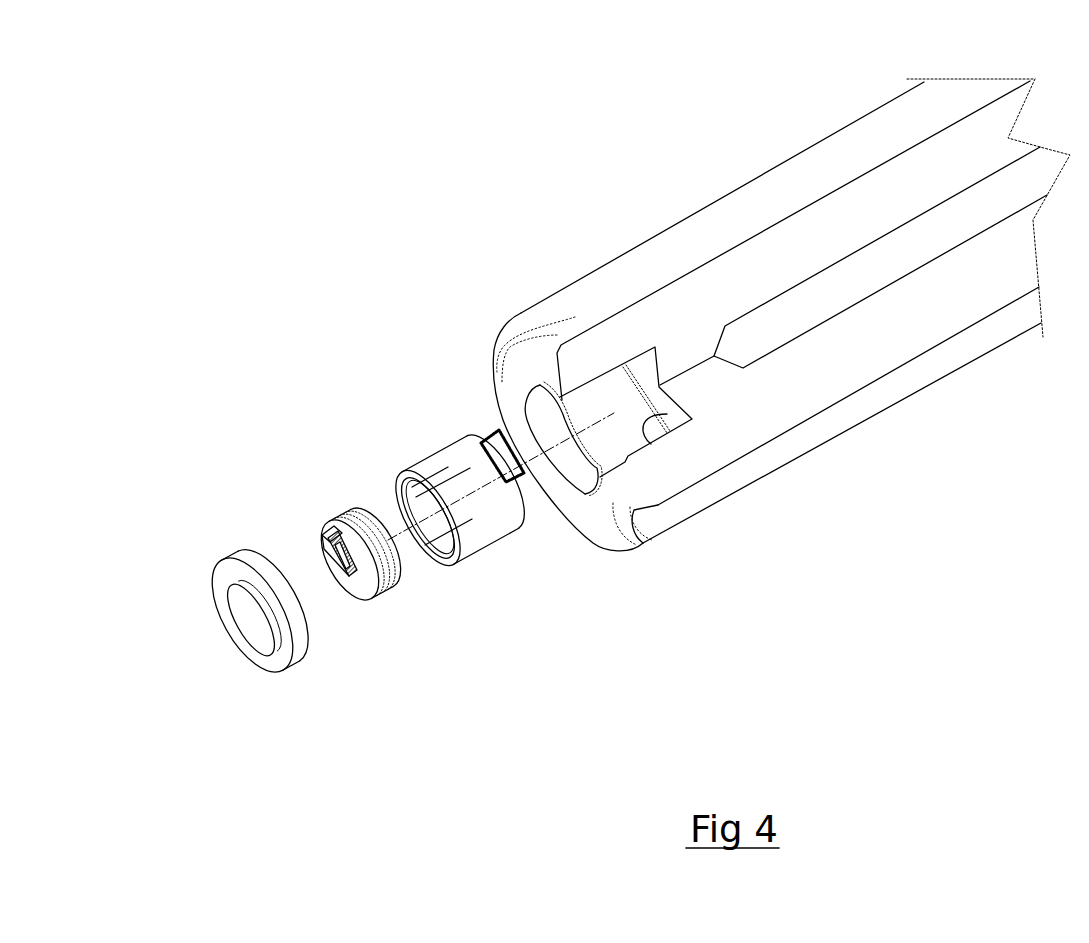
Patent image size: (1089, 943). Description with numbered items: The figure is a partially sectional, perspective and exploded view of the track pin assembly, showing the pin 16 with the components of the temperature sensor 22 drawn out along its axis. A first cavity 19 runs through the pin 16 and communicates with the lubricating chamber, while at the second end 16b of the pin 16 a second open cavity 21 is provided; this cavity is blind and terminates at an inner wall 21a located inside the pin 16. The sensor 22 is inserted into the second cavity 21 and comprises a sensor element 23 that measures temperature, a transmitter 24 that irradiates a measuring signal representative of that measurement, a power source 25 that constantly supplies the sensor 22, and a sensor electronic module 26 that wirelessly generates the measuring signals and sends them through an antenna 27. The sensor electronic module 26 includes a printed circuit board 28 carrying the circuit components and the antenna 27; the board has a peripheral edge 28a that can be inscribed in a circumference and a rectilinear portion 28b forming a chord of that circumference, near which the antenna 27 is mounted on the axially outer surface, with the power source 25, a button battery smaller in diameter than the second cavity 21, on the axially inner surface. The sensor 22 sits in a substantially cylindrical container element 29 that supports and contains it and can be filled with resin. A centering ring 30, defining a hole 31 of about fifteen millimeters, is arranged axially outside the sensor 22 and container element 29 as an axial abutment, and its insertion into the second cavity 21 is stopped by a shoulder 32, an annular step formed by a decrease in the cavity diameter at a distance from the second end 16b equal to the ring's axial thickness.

The pin 16 is at (747, 178).
The second end of the pin 16b is at (507, 360).
The first cavity 19 is at (902, 247).
The second cavity 21 is at (610, 376).
The inner wall 21a is at (651, 444).
The sensor 22 is at (402, 640).
The sensor element 23 is at (495, 432).
The transmitter 24 is at (320, 533).
The power source 25 is at (353, 510).
The sensor electronic module 26 is at (385, 598).
The antenna 27 is at (320, 545).
The printed circuit board 28 is at (357, 587).
The peripheral edge 28a is at (368, 598).
The rectilinear portion 28b is at (348, 513).
The container element 29 is at (445, 462).
The centering ring 30 is at (263, 663).
The hole 31 is at (243, 615).
The shoulder 32 is at (600, 474).